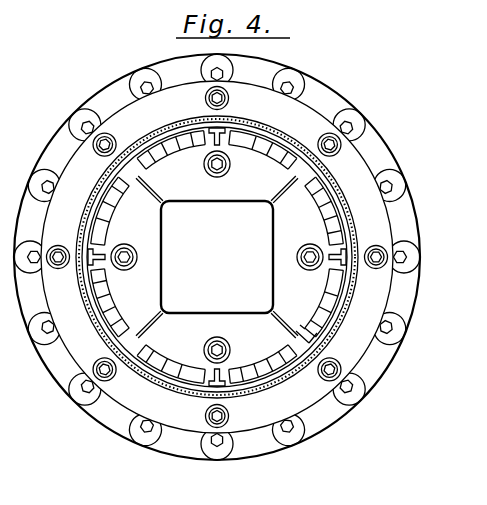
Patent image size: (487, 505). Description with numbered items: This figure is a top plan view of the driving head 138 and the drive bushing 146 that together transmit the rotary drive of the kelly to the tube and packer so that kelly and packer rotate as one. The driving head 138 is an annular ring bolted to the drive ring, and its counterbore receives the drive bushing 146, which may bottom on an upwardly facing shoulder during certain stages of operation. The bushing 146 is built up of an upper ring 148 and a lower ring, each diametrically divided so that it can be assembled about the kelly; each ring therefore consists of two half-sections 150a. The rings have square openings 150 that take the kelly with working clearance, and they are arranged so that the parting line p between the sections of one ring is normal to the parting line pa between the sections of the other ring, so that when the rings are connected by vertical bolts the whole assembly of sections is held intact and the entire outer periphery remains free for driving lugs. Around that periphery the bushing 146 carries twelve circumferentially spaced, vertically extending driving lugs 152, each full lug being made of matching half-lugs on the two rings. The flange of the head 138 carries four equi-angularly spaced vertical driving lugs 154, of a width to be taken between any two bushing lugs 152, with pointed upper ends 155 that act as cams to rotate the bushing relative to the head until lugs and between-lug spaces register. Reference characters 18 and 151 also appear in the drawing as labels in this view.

The coupling assembly 18 is at (343, 92).
The driving head 138 is at (368, 135).
The drive bushing 146 is at (325, 288).
The upper ring 148 is at (311, 238).
The square opening 150 is at (217, 257).
The half-section 150a is at (207, 257).
The cap screws 151 is at (123, 246).
The driving lug 152 is at (305, 315).
The vertical driving lug 154 is at (142, 335).
The pointed end 155 is at (277, 347).
The parting line p is at (279, 195).
The parting line pa is at (154, 184).